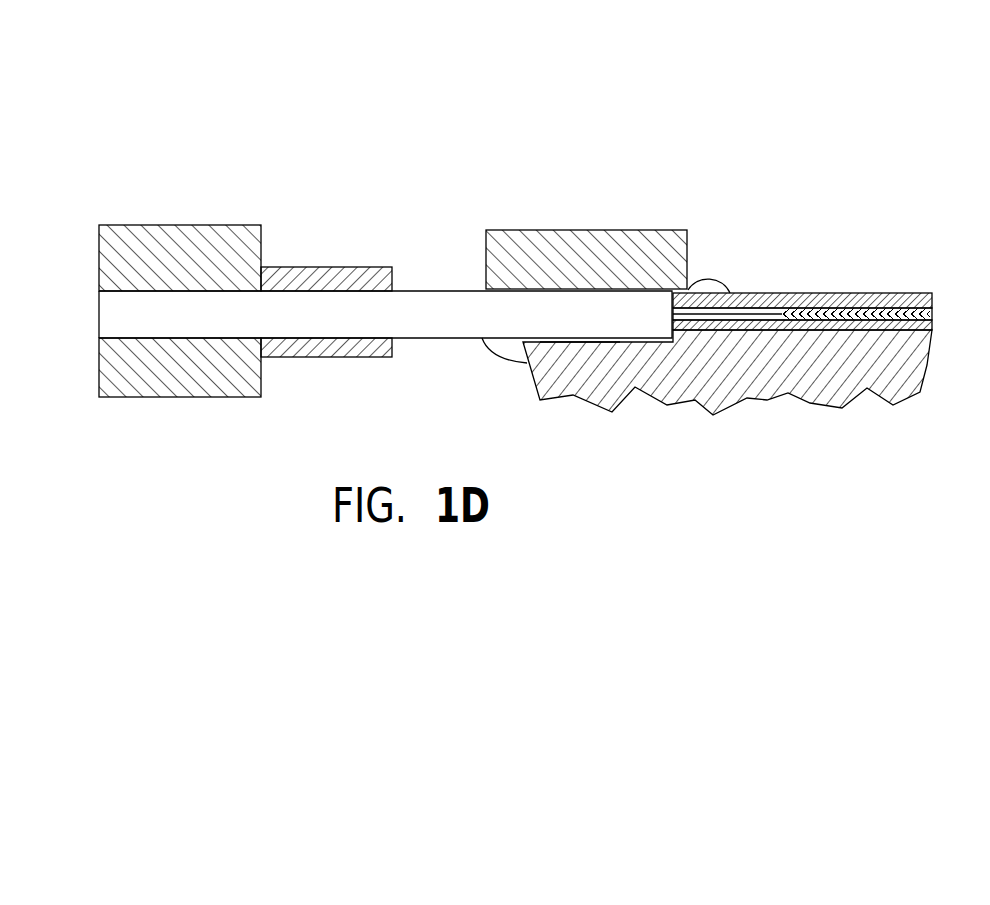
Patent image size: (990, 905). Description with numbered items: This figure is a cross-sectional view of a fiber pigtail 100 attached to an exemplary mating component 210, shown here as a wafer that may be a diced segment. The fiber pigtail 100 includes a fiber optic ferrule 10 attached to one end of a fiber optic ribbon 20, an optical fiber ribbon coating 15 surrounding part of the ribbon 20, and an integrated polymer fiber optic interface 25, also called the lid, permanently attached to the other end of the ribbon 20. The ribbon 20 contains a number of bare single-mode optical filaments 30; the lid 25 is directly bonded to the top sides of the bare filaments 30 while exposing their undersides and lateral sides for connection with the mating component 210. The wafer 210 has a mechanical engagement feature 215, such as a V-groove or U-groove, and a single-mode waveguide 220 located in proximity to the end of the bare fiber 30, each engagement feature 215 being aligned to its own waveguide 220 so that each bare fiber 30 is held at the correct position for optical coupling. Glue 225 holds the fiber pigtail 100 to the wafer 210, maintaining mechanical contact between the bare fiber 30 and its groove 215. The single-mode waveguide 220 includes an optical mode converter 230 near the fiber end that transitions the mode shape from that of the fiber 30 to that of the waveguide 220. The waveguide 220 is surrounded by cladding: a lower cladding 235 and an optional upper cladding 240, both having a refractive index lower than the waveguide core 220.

The fiber pigtail 100 is at (687, 88).
The fiber optic ribbon 20 is at (670, 155).
The bare single-mode optical filaments 30 is at (670, 222).
The fiber optic ferrule 10 is at (123, 383).
The optical fiber ribbon coating 15 is at (327, 350).
The fiber optic interface 25 is at (676, 245).
The glue 225 is at (700, 286).
The single-mode waveguide 220 is at (932, 303).
The optical mode converter 230 is at (737, 313).
The upper cladding 240 is at (900, 302).
The lower cladding 235 is at (932, 337).
The mating component 210 is at (910, 380).
The mechanical engagement feature 215 is at (575, 362).